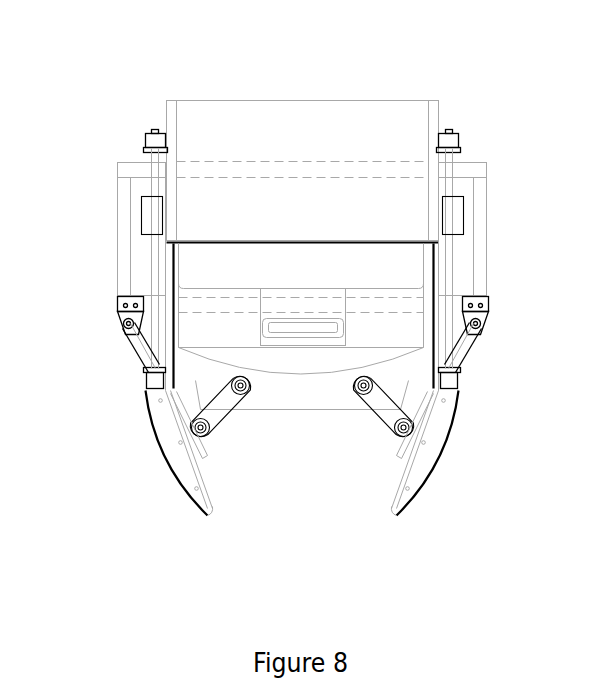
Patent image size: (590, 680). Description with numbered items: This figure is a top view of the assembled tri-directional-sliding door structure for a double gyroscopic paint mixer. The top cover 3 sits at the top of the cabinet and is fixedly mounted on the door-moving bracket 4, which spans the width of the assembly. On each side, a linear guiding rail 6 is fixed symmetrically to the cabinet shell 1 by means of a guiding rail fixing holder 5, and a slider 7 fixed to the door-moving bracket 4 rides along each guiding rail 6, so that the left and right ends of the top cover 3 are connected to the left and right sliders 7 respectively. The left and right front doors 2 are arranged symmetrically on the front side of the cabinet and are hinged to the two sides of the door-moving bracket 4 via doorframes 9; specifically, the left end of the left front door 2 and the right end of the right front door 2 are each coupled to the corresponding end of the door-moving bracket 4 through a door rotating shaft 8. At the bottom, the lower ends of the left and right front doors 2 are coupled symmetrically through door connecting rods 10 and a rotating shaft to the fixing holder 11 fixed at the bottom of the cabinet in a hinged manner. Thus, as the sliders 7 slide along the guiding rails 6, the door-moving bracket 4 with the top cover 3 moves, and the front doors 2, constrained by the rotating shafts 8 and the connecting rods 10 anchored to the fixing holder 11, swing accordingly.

The shell 1 is at (338, 118).
The front door 2 is at (175, 470).
The top cover 3 is at (300, 262).
The door-moving bracket 4 is at (135, 165).
The guiding rail fixing holder 5 is at (130, 287).
The guiding rail 6 is at (155, 262).
The slider 7 is at (150, 216).
The rotating shaft 8 is at (123, 324).
The doorframe 9 is at (138, 355).
The door connecting rod 10 is at (218, 408).
The fixing holder 11 is at (305, 393).